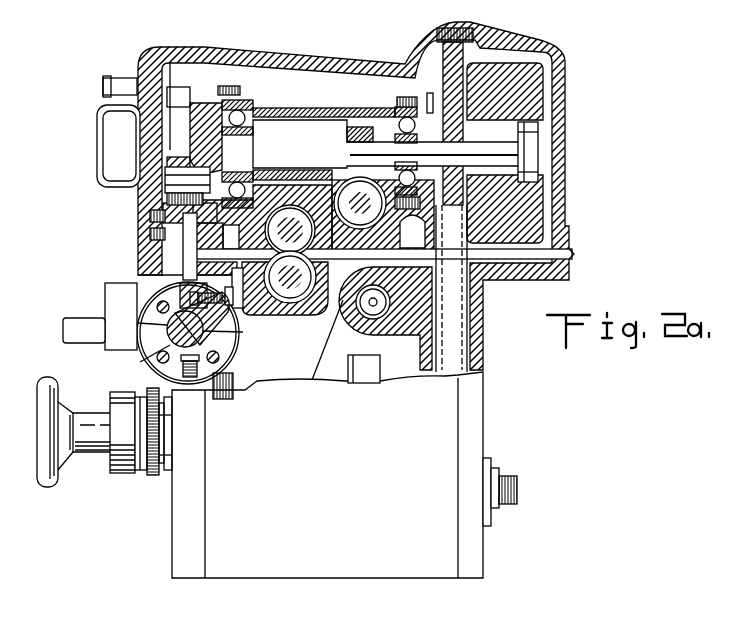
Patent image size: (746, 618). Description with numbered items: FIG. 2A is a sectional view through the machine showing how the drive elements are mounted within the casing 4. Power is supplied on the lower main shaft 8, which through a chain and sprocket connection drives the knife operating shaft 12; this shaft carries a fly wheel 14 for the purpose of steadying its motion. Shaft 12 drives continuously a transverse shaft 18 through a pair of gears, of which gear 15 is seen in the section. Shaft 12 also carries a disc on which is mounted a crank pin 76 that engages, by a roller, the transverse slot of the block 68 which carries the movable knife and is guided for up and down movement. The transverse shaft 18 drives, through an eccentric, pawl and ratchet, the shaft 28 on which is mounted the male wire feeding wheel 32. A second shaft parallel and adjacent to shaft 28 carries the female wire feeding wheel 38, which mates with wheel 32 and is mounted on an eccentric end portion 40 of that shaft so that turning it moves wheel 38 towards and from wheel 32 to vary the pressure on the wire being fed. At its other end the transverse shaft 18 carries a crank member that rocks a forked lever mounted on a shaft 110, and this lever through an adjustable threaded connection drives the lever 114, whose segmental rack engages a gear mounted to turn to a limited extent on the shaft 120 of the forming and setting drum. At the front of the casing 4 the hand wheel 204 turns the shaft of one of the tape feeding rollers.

The casing 4 is at (448, 392).
The lower main shaft 8 is at (507, 503).
The knife operating shaft 12 is at (530, 147).
The fly wheel 14 is at (540, 80).
The gear 15 is at (358, 132).
The transverse shaft 18 is at (348, 198).
The shaft 28 is at (266, 300).
The male wire feeding wheel 32 is at (310, 318).
The female wire feeding wheel 38 is at (281, 292).
The eccentric end portion 40 is at (303, 244).
The block 68 is at (162, 148).
The crank pin 76 is at (163, 175).
The shaft 110 is at (375, 305).
The lever 114 is at (250, 376).
The shaft 120 is at (150, 360).
The hand wheel 204 is at (42, 480).